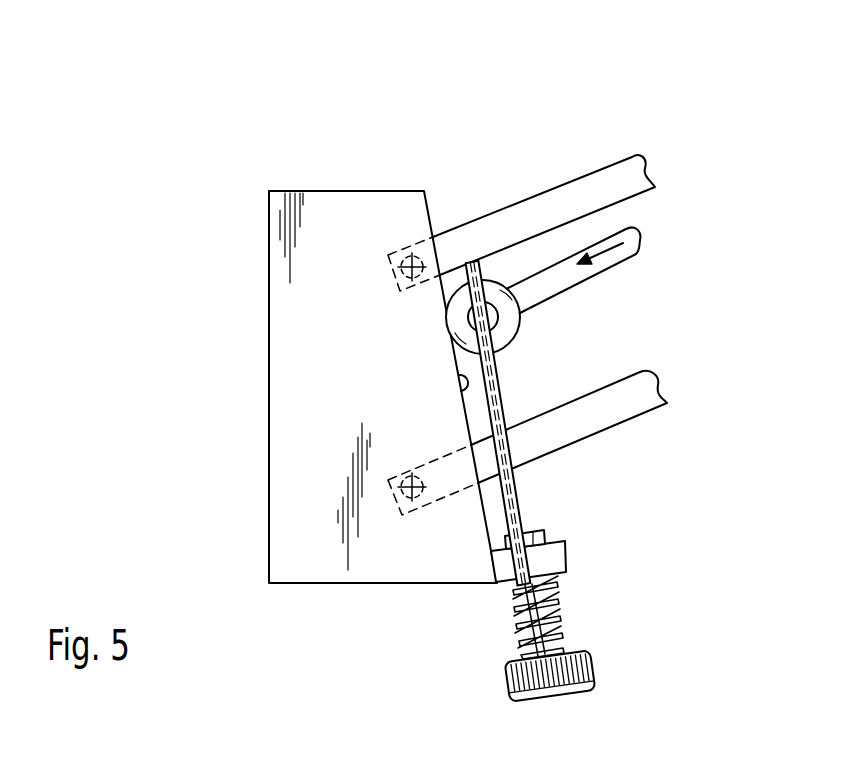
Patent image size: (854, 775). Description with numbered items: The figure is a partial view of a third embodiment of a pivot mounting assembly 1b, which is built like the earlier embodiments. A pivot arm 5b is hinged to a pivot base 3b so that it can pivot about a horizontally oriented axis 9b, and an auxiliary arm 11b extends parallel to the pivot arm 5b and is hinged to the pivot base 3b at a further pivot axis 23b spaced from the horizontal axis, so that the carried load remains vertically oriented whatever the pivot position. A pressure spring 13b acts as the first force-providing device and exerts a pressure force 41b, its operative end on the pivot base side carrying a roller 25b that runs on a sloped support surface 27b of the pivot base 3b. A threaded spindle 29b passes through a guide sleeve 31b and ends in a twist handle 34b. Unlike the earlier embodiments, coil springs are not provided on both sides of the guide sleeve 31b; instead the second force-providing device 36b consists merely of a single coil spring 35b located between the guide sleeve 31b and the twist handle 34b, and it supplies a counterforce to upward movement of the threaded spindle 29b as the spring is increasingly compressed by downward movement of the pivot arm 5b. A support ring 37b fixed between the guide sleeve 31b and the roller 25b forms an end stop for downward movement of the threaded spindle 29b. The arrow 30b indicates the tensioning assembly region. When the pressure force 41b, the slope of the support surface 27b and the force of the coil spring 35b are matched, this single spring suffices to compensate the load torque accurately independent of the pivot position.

The pivot mounting assembly 1b is at (533, 105).
The pivot base 3b is at (330, 191).
The pivot arm 5b is at (609, 160).
The horizontal axis 9b is at (405, 263).
The auxiliary arm 11b is at (668, 405).
The pressure spring 13b is at (650, 225).
The further pivot axis 23b is at (411, 500).
The roller 25b is at (521, 313).
The support surface 27b is at (453, 381).
The threaded spindle 29b is at (513, 402).
The tensioning assembly 30b is at (697, 622).
The guide sleeve 31b is at (567, 556).
The twist handle 34b is at (596, 672).
The coil spring 35b is at (560, 612).
The second force-providing device 36b is at (495, 632).
The support ring 37b is at (546, 534).
The pressure force 41b is at (637, 250).